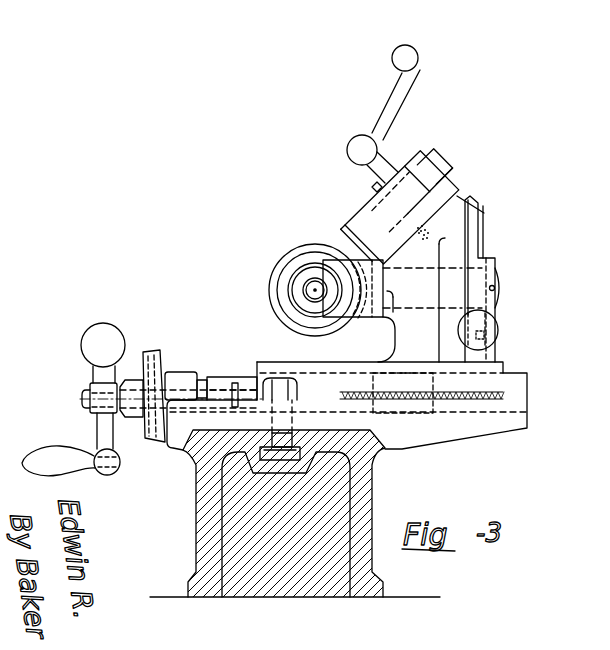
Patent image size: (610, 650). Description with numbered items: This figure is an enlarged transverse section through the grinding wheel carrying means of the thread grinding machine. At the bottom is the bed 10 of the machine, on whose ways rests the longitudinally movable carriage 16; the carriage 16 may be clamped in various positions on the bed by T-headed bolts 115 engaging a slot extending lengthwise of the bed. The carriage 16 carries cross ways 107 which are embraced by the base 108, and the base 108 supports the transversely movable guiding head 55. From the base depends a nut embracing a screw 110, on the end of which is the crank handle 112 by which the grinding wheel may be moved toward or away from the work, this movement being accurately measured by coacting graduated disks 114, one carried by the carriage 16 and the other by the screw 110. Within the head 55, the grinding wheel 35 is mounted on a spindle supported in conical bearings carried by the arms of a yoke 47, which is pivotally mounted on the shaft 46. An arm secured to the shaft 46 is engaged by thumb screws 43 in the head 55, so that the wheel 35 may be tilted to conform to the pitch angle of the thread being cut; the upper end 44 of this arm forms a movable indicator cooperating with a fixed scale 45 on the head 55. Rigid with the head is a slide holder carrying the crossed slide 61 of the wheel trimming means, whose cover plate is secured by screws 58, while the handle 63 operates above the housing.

The bed 10 is at (348, 508).
The carriage 16 is at (518, 418).
The grinding wheel 35 is at (276, 260).
The thumb screws 43 is at (499, 328).
The upper end of the arm 44 is at (486, 210).
The fixed scale 45 is at (469, 195).
The shaft 46 is at (397, 273).
The yoke 47 is at (367, 318).
The guiding head 55 is at (369, 205).
The screws 58 is at (372, 184).
The slide 61 is at (448, 158).
The operating lever 63 is at (407, 108).
The cross ways 107 is at (245, 375).
The base 108 is at (323, 364).
The screw 110 is at (82, 400).
The crank handle 112 is at (38, 450).
The graduated disks 114 is at (156, 442).
The T-headed bolts 115 is at (258, 478).